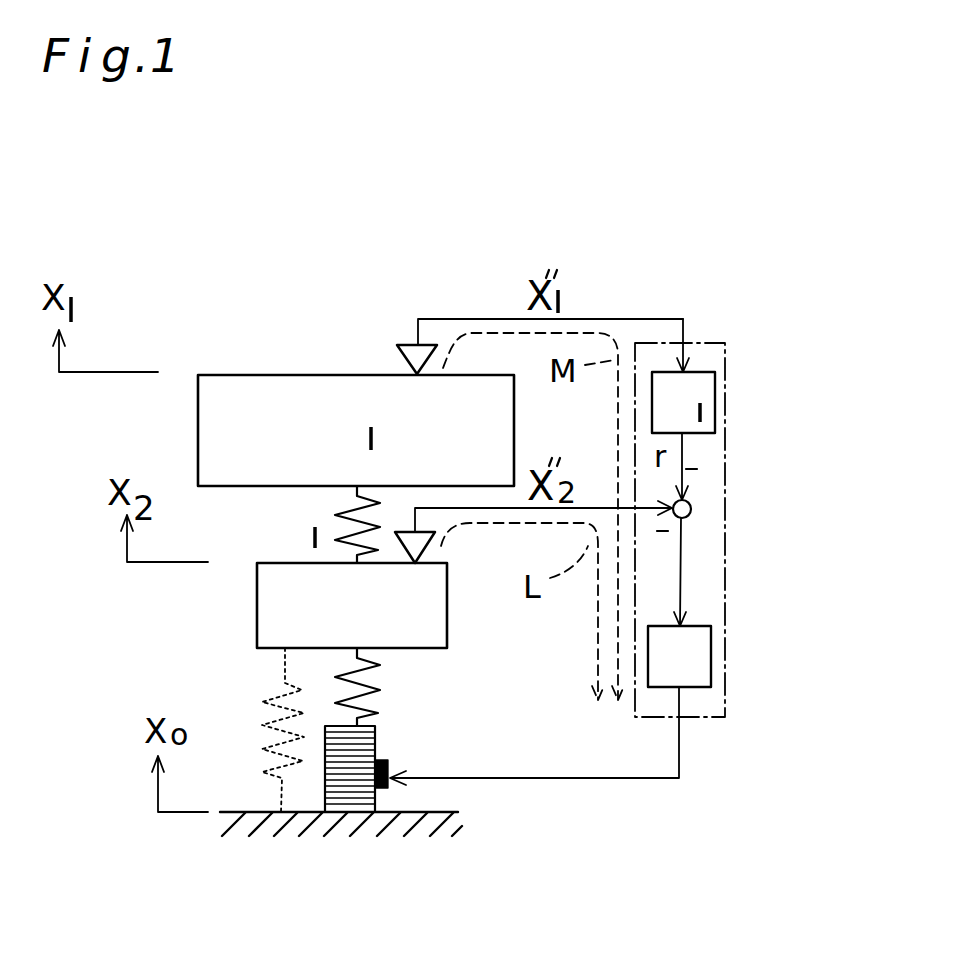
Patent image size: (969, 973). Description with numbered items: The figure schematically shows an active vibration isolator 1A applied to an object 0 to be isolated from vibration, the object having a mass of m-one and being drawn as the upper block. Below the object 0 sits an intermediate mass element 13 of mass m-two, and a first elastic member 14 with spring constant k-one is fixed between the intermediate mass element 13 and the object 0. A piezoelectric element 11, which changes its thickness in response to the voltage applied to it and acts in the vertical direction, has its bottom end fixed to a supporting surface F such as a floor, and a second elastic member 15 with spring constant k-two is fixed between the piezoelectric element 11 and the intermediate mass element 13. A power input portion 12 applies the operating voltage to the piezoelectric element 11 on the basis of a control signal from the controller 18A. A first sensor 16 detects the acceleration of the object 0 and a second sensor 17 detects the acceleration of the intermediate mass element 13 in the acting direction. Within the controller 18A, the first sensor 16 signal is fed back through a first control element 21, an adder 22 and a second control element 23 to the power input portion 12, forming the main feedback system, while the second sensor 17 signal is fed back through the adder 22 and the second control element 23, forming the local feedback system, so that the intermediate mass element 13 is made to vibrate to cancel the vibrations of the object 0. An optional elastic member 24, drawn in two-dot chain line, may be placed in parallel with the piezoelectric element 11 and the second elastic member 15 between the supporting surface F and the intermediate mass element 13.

The object to be isolated from vibration 0 is at (253, 375).
The intermediate mass element 13 is at (260, 598).
The first elastic member 14 is at (340, 498).
The second elastic member 15 is at (365, 657).
The first sensor 16 is at (408, 356).
The second sensor 17 is at (436, 540).
The elastic member 24 is at (281, 775).
The piezoelectric element 11 is at (352, 797).
The power input portion 12 is at (388, 790).
The supporting surface F is at (238, 812).
The active vibration isolator 1A is at (704, 298).
The first control element 21 is at (710, 377).
The adder 22 is at (692, 509).
The second control element 23 is at (657, 678).
The controller 18A is at (661, 893).